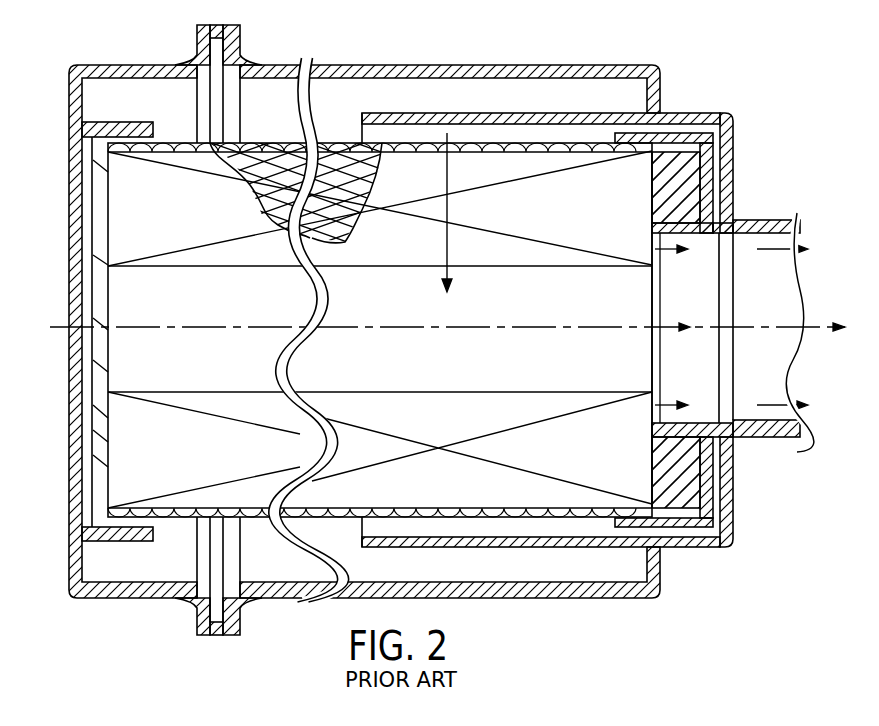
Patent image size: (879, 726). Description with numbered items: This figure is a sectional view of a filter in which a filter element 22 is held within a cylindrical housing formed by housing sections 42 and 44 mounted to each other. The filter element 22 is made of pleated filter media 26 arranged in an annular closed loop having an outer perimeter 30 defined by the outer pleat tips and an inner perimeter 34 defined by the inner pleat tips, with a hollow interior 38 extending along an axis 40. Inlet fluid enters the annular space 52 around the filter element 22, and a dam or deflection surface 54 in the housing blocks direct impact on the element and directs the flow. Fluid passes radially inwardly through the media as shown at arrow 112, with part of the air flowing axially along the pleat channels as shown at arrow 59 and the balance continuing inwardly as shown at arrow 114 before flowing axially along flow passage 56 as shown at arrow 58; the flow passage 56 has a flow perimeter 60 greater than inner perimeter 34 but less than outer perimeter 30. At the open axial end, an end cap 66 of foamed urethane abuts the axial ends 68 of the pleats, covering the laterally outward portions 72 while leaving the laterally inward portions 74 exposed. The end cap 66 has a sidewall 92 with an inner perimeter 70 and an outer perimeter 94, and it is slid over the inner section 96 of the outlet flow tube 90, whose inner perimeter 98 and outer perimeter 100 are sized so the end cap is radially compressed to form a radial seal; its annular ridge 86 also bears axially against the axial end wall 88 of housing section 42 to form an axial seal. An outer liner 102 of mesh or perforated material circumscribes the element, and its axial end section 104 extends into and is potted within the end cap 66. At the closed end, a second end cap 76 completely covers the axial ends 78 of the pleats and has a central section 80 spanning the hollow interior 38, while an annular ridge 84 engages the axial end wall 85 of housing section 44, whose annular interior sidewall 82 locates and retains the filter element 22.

The filter element 22 is at (336, 142).
The pleated filter media 26 is at (120, 222).
The outer perimeter 30 is at (133, 163).
The inner perimeter 34 is at (130, 260).
The hollow interior 38 is at (120, 372).
The axis 40 is at (254, 327).
The housing section 42 is at (357, 63).
The housing section 44 is at (123, 65).
The annular space 52 is at (495, 88).
The interior dam or deflection surface 54 is at (480, 548).
The flow passage 56 is at (660, 292).
The arrow 58 is at (797, 328).
The arrow 59 is at (810, 408).
The flow perimeter 60 is at (708, 228).
The end cap 66 is at (713, 173).
The axial ends of the pleats 68 is at (652, 156).
The inner perimeter 70 is at (680, 214).
The laterally outward portions 72 is at (680, 488).
The laterally inward portions 74 is at (652, 411).
The second end cap 76 is at (105, 415).
The axial ends of the pleats 78 is at (110, 440).
The central section 80 is at (100, 338).
The annular interior sidewall 82 is at (125, 122).
The annular ridge 84 is at (90, 455).
The axial end wall 85 is at (80, 493).
The annular ridge 86 is at (718, 217).
The axial end wall 88 is at (733, 194).
The outlet flow tube 90 is at (800, 227).
The sidewall 92 is at (706, 488).
The outer perimeter 94 is at (690, 528).
The inner section 96 is at (652, 221).
The inner perimeter 98 is at (690, 418).
The outer perimeter 100 is at (653, 438).
The outer liner 102 is at (413, 507).
The axial end section 104 is at (722, 518).
The arrow 112 is at (447, 181).
The arrow 114 is at (445, 268).